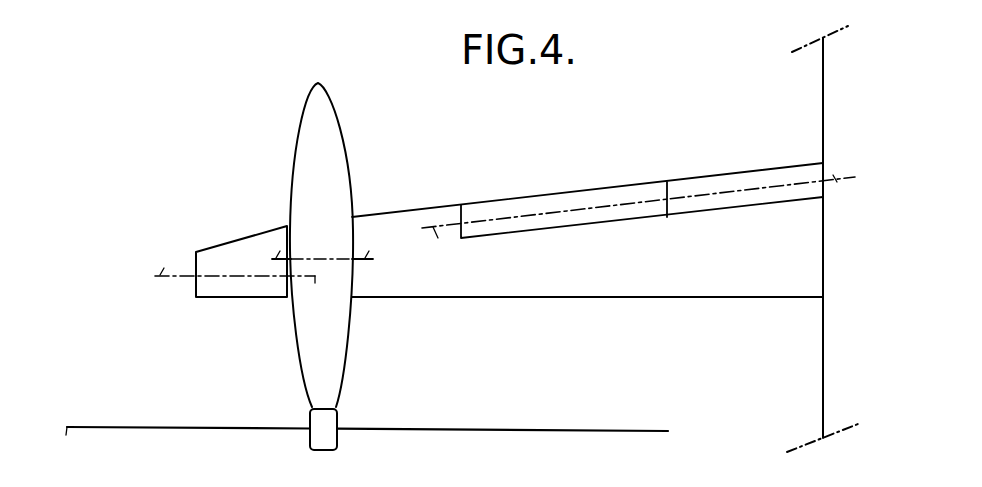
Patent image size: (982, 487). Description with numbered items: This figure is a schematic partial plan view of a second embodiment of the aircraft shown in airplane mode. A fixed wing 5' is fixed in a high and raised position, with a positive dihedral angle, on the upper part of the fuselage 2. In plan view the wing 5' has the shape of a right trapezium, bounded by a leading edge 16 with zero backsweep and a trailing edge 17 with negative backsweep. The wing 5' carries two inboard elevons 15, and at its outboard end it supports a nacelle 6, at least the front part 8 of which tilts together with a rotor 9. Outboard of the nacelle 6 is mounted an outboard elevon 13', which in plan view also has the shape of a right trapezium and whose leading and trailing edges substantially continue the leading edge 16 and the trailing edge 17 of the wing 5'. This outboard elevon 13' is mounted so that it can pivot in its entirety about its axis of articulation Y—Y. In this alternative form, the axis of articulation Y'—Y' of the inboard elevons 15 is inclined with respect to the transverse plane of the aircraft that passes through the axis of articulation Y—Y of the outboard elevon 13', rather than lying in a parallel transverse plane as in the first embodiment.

The fuselage 2 is at (830, 398).
The fixed wing 5' is at (587, 322).
The nacelle 6 is at (285, 203).
The front part of the nacelle 8 is at (322, 376).
The rotor 9 is at (453, 430).
The outboard elevon 13' is at (236, 245).
The inboard elevons 15 is at (673, 192).
The leading edge 16 is at (562, 298).
The trailing edge 17 is at (408, 210).